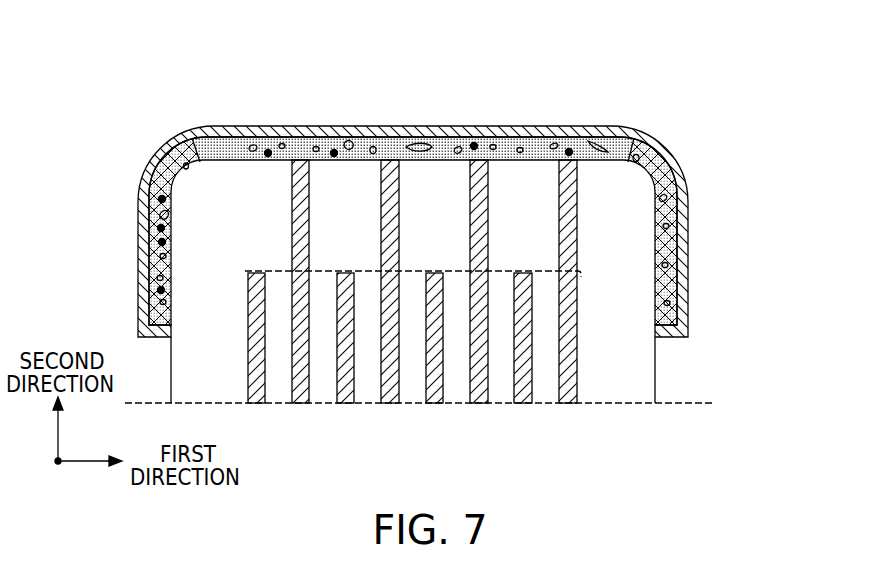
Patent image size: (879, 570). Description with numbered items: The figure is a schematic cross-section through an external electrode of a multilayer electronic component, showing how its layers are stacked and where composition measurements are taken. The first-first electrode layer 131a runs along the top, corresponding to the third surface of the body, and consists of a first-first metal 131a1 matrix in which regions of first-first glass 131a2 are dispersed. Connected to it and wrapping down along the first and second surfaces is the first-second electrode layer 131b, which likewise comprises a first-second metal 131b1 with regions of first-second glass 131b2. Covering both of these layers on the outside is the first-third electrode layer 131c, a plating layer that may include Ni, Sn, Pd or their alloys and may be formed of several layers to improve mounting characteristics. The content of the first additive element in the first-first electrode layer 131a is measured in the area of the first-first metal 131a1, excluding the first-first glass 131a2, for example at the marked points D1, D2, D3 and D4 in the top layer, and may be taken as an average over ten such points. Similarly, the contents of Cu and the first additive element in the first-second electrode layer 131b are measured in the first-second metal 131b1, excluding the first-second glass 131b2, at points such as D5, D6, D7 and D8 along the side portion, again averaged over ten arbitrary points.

The 1-1-th electrode layer 131a is at (415, 88).
The 1-1-th metal 131a1 is at (397, 150).
The 1-1-th glass 131a2 is at (446, 48).
The 1-2-th electrode layer 131b is at (496, 231).
The 1-2-th metal 131b1 is at (666, 243).
The 1-2-th glass 131b2 is at (666, 290).
The 1-3-th electrode layer 131c is at (607, 133).
The measurement point D1 is at (268, 150).
The measurement point D2 is at (334, 150).
The measurement point D3 is at (474, 143).
The measurement point D4 is at (569, 149).
The measurement point D5 is at (159, 199).
The measurement point D6 is at (158, 228).
The measurement point D7 is at (158, 242).
The measurement point D8 is at (158, 290).